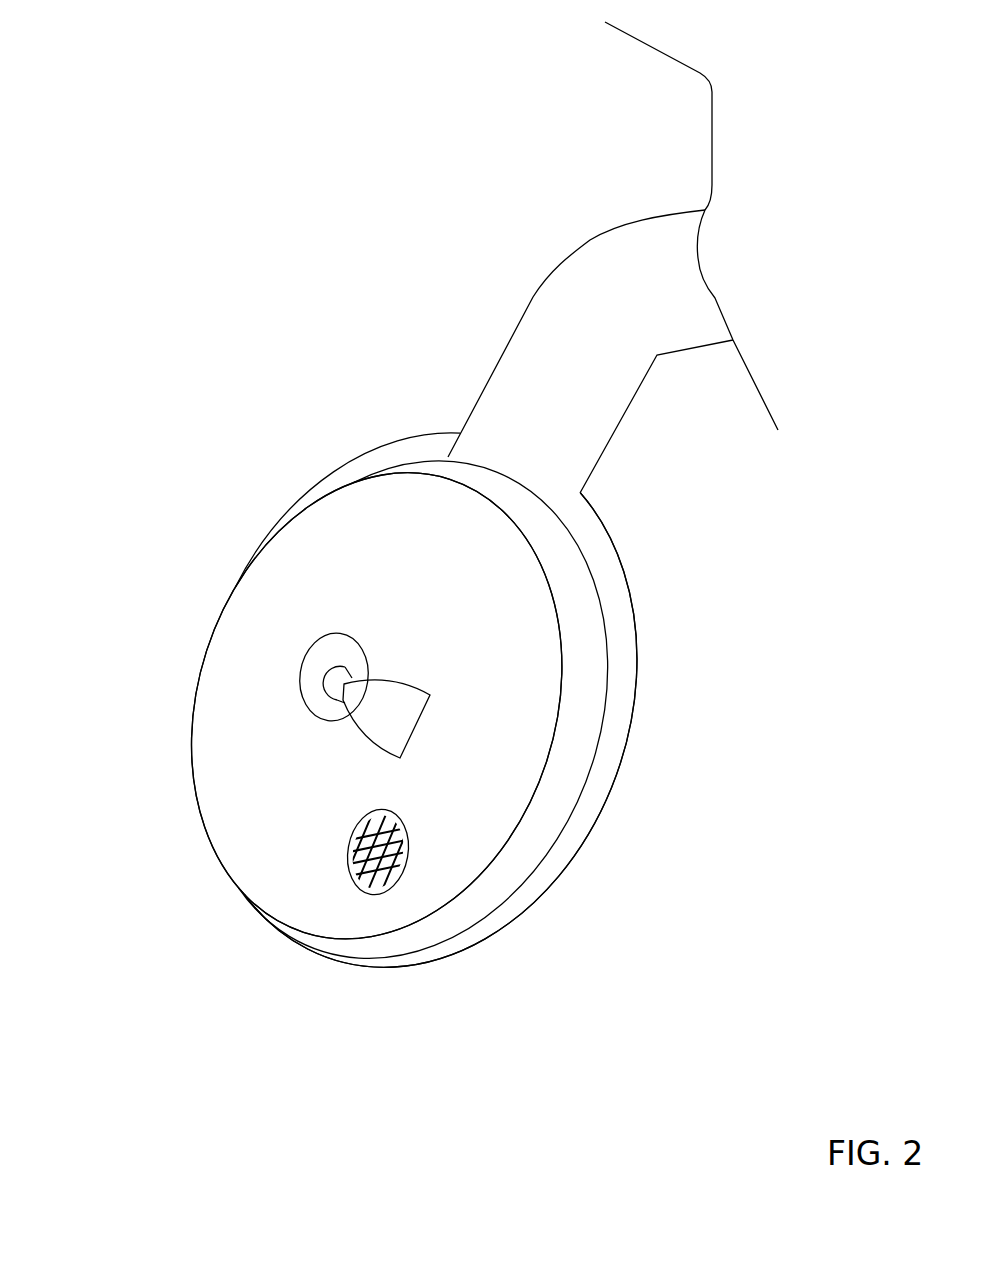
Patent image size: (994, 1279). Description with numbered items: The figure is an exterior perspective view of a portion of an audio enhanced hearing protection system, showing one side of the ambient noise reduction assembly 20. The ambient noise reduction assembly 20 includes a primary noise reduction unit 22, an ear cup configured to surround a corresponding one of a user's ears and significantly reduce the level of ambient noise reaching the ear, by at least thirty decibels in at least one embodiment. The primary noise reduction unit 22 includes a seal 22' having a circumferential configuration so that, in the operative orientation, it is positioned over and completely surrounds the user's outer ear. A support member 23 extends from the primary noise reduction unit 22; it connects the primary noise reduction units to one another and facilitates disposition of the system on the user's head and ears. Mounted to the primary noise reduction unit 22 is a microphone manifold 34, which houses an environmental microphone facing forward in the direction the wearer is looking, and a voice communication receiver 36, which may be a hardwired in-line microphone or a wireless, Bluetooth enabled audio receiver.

The ambient noise reduction assembly 20 is at (332, 428).
The primary noise reduction unit 22 is at (323, 705).
The seal 22' is at (536, 700).
The support member 23 is at (623, 410).
The microphone manifold 34 is at (382, 745).
The voice communication receiver 36 is at (366, 894).